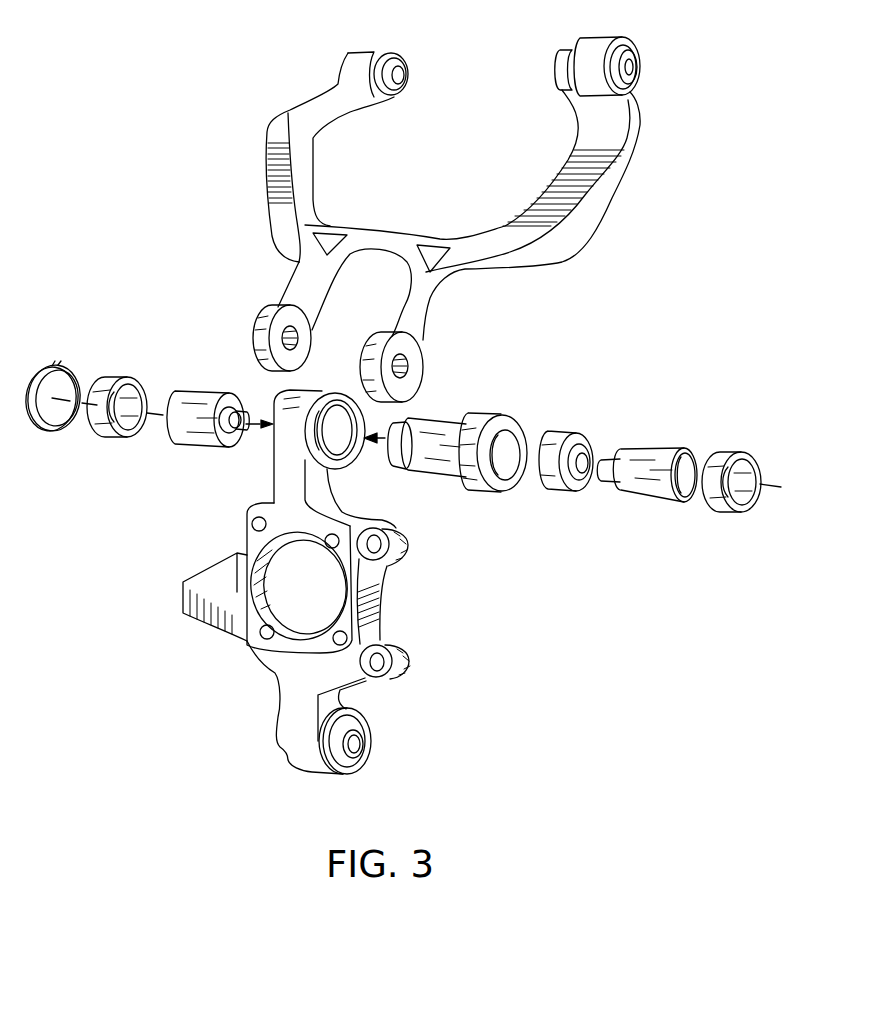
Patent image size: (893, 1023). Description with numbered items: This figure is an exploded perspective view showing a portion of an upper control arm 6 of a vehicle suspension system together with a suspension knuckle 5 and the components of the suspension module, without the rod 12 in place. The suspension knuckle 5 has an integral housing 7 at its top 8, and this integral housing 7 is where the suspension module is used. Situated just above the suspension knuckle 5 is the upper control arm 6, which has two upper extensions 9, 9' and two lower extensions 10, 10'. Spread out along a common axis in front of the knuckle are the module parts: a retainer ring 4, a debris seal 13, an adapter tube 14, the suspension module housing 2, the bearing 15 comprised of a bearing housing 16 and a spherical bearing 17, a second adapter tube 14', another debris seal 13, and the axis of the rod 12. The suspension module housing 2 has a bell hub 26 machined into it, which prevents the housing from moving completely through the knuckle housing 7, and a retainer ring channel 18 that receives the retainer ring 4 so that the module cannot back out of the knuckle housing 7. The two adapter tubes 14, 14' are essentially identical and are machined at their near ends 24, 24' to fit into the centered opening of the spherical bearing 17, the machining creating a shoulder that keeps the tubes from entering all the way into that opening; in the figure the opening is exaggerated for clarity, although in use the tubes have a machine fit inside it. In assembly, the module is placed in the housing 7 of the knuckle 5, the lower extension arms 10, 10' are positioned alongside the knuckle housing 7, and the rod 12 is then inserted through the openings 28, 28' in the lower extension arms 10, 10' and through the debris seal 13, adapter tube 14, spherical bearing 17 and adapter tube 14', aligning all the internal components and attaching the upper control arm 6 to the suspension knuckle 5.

The suspension module housing 2 is at (465, 415).
The retainer ring 4 is at (73, 366).
The suspension knuckle 5 is at (335, 582).
The upper control arm 6 is at (453, 219).
The integral housing 7 is at (277, 431).
The top 8 is at (334, 471).
The upper extension 9 is at (337, 157).
The upper extension 9' is at (531, 188).
The lower extension arm 10 is at (305, 340).
The lower extension arm 10' is at (421, 345).
The rod 12 is at (771, 479).
The debris seal 13 is at (120, 377).
The adapter tube 14 is at (181, 421).
The adapter tube 14' is at (647, 479).
The bearing 15 is at (558, 450).
The bearing housing 16 is at (550, 486).
The spherical bearing 17 is at (583, 492).
The retainer ring channel 18 is at (411, 425).
The near end 24 is at (230, 388).
The near end 24' is at (618, 435).
The bell hub 26 is at (518, 412).
The opening 28 is at (316, 351).
The opening 28' is at (443, 348).